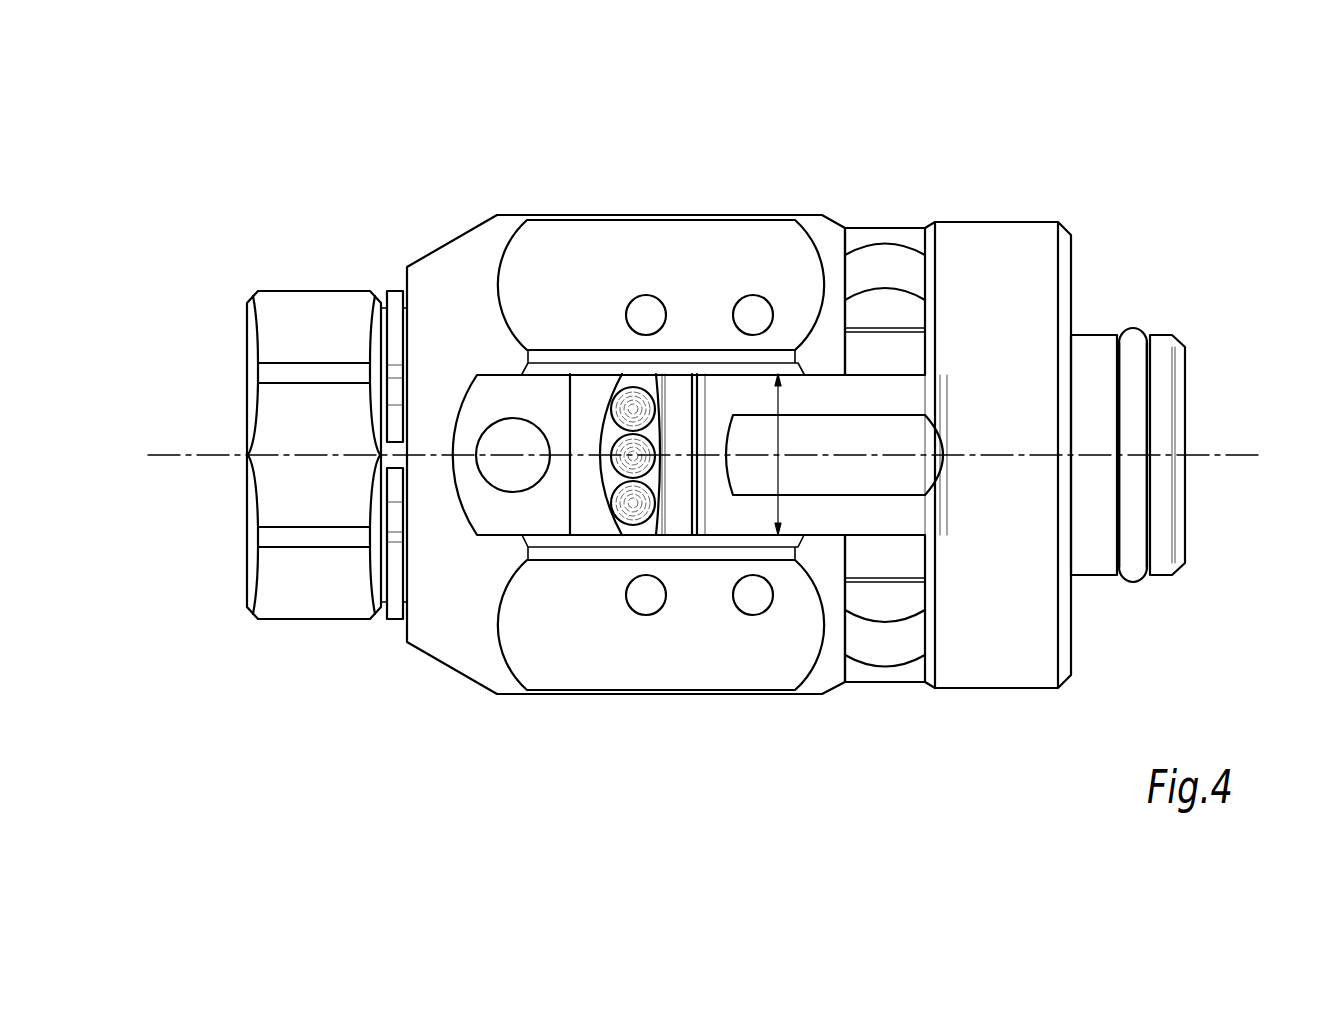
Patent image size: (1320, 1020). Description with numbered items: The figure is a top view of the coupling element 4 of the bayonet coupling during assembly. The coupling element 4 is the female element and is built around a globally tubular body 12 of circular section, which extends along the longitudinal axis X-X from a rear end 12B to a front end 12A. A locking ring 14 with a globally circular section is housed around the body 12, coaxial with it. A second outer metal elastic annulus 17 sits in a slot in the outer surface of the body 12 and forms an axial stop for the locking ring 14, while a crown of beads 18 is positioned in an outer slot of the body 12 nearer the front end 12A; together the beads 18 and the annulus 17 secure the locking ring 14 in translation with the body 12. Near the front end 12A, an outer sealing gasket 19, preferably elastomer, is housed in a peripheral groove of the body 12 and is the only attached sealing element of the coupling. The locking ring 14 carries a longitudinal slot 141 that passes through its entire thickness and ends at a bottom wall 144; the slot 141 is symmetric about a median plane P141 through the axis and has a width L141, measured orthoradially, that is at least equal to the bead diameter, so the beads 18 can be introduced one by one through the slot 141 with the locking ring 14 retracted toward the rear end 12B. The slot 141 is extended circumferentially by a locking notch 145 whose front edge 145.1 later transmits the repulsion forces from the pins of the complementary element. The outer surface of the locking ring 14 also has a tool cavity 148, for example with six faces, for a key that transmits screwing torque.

The coupling element 4 is at (708, 441).
The body 12 is at (1113, 464).
The front end 12A is at (1185, 386).
The rear end 12B is at (246, 370).
The locking ring 14 is at (462, 637).
The second outer metal elastic annulus 17 is at (397, 300).
The beads 18 is at (636, 409).
The outer sealing gasket 19 is at (1133, 570).
The longitudinal slot 141 is at (1020, 420).
The bottom wall 144 is at (613, 450).
The locking notch 145 is at (917, 468).
The front edge 145.1 is at (923, 283).
The tool cavity 148 is at (612, 645).
The median plane P141 is at (703, 462).
The width of the slot L141 is at (768, 454).